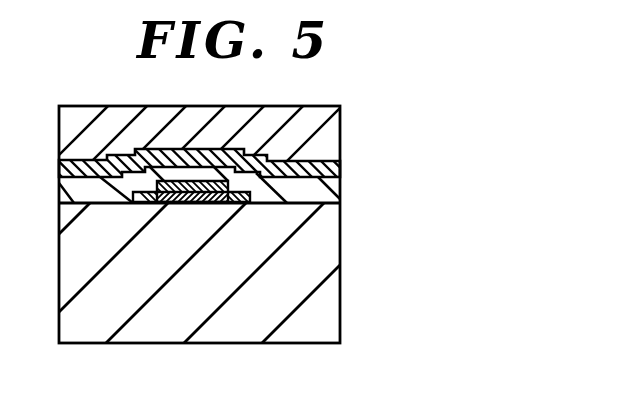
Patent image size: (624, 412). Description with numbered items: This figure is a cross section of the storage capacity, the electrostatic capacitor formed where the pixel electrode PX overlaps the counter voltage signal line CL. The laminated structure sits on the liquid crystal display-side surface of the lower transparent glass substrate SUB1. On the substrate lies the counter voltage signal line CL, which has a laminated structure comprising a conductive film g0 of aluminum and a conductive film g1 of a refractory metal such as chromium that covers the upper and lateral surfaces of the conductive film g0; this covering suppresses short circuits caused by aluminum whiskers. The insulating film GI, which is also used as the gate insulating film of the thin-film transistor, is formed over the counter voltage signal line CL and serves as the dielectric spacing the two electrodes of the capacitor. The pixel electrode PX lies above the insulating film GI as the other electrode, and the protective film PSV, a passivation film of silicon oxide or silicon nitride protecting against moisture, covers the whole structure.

The protective film PSV is at (336, 123).
The pixel electrode PX is at (336, 172).
The insulating film GI is at (342, 188).
The lower transparent glass substrate SUB1 is at (327, 243).
The conductive film g0 is at (250, 265).
The conductive film g1 is at (230, 204).
The counter voltage signal line CL is at (198, 245).